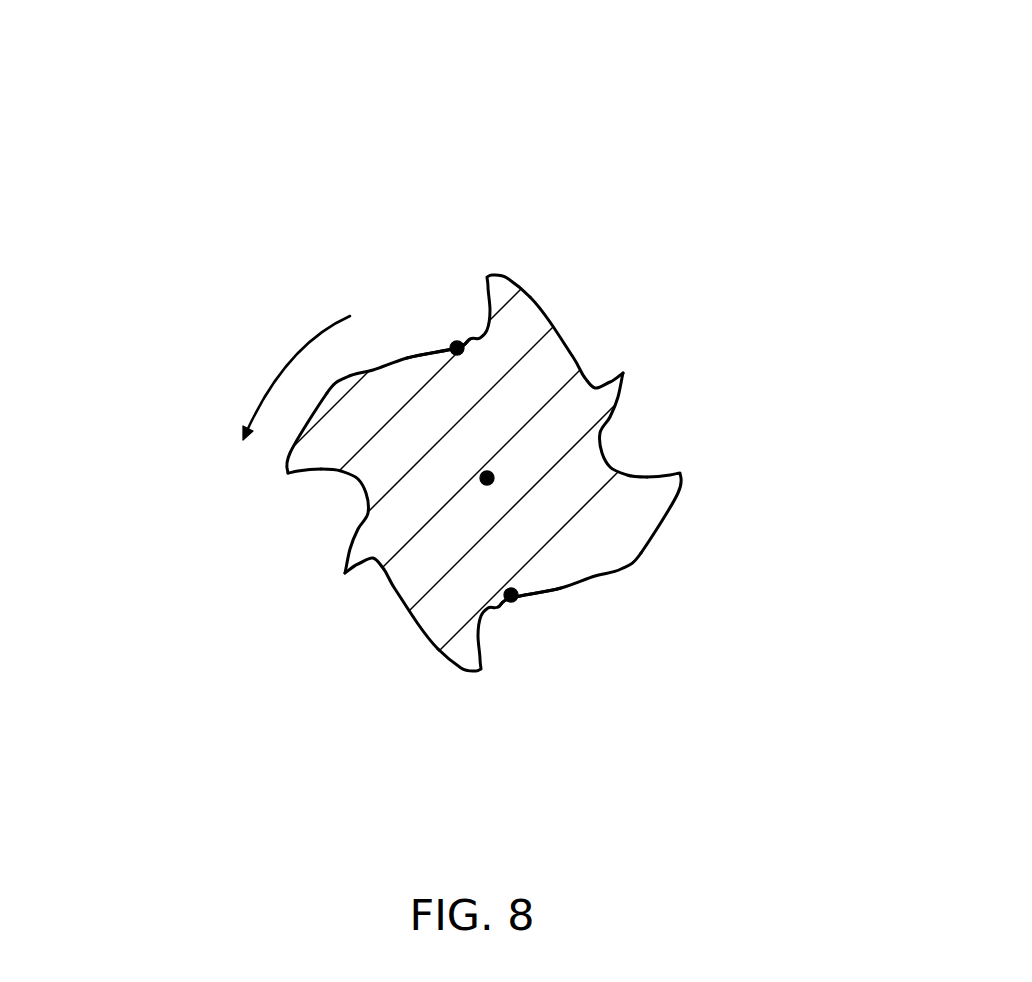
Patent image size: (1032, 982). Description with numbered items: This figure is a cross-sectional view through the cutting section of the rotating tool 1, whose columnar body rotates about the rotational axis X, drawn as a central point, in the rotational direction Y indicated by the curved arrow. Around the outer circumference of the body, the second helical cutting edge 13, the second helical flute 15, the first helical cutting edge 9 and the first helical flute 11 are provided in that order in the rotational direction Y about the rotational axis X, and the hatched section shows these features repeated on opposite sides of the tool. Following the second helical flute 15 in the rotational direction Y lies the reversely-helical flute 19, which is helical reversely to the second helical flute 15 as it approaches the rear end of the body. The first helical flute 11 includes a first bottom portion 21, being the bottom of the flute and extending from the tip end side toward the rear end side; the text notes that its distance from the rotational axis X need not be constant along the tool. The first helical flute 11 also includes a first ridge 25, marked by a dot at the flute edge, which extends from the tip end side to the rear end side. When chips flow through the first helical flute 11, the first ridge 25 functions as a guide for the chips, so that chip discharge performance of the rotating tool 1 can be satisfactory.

The rotating tool 1 is at (200, 240).
The first helical cutting edge 9 is at (487, 288).
The first helical flute 11 is at (407, 358).
The second helical cutting edge 13 is at (683, 474).
The second helical flute 15 is at (607, 460).
The reversely-helical flute 19 is at (575, 360).
The first bottom portion 21 is at (453, 342).
The first ridge 25 is at (462, 343).
The rotational axis X is at (490, 479).
The rotational direction Y is at (292, 378).